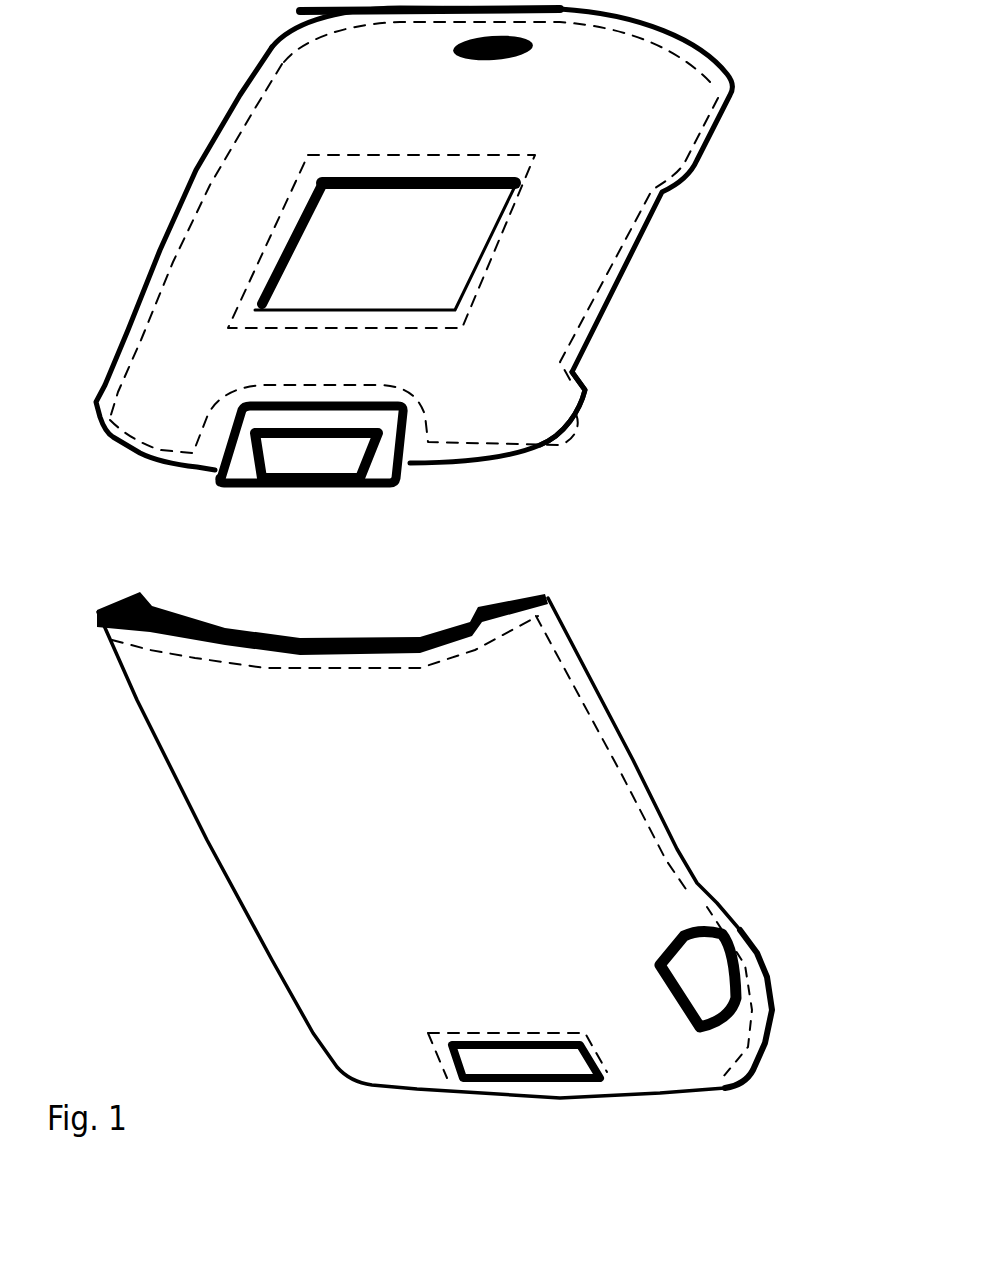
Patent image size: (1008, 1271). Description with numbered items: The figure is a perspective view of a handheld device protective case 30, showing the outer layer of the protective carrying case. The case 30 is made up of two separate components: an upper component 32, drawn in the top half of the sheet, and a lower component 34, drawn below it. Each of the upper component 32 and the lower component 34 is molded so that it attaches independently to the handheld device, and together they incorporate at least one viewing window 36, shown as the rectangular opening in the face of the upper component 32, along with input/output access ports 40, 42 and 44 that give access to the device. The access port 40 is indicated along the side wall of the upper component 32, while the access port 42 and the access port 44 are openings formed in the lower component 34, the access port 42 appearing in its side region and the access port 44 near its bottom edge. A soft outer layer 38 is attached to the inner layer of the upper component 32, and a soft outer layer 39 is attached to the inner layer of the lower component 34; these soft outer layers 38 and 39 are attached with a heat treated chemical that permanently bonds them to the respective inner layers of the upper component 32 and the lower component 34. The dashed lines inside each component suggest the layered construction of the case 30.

The handheld device protective case 30 is at (824, 352).
The upper component 32 is at (712, 86).
The lower component 34 is at (597, 712).
The viewing window 36 is at (418, 211).
The soft outer layer 38 is at (503, 377).
The soft outer layer 39 is at (593, 849).
The input/output access port 40 is at (620, 296).
The input/output access port 42 is at (700, 962).
The input/output access port 44 is at (547, 1060).